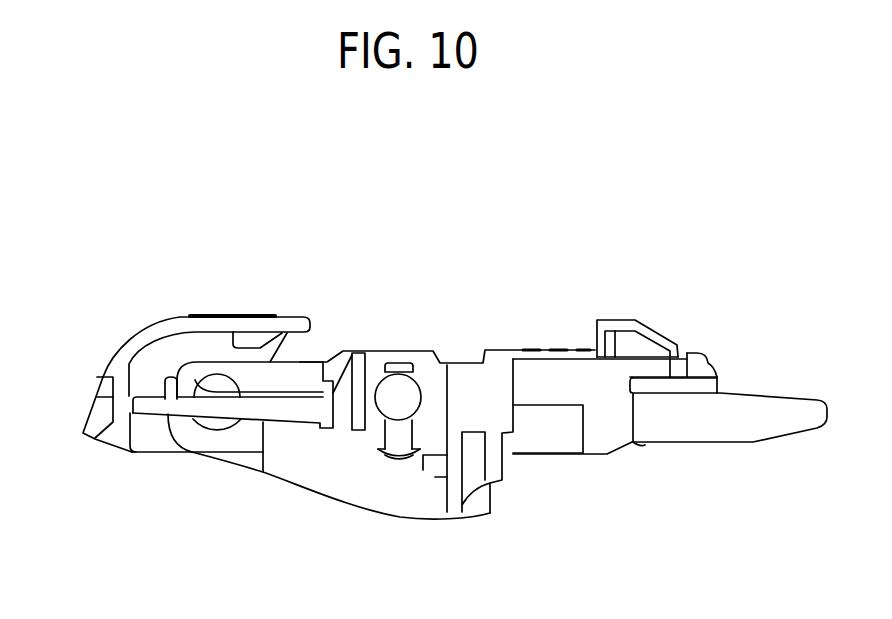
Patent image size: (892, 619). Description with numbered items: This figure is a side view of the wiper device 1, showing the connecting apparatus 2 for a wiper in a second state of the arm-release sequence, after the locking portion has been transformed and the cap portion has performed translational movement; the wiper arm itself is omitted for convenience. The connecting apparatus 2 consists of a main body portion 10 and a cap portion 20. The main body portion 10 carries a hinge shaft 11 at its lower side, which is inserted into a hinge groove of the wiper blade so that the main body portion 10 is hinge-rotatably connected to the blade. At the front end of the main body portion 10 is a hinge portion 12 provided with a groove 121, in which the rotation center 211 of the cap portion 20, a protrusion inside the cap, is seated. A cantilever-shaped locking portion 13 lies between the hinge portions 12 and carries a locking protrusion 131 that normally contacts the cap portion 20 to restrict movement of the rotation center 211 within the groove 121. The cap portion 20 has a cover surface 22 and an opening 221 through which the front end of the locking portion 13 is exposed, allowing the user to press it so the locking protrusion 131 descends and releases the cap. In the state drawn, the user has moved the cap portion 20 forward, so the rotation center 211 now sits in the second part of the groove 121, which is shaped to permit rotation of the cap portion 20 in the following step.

The wiper device 1 is at (792, 173).
The connecting apparatus for a wiper 2 is at (562, 297).
The main body portion 10 is at (612, 433).
The hinge shaft 11 is at (398, 486).
The hinge portion 12 is at (197, 440).
The groove 121 is at (220, 432).
The locking portion 13 is at (131, 413).
The locking protrusion 131 is at (167, 390).
The cap portion 20 is at (230, 316).
The rotation center 211 is at (217, 392).
The cover surface 22 is at (143, 330).
The opening 221 is at (102, 412).